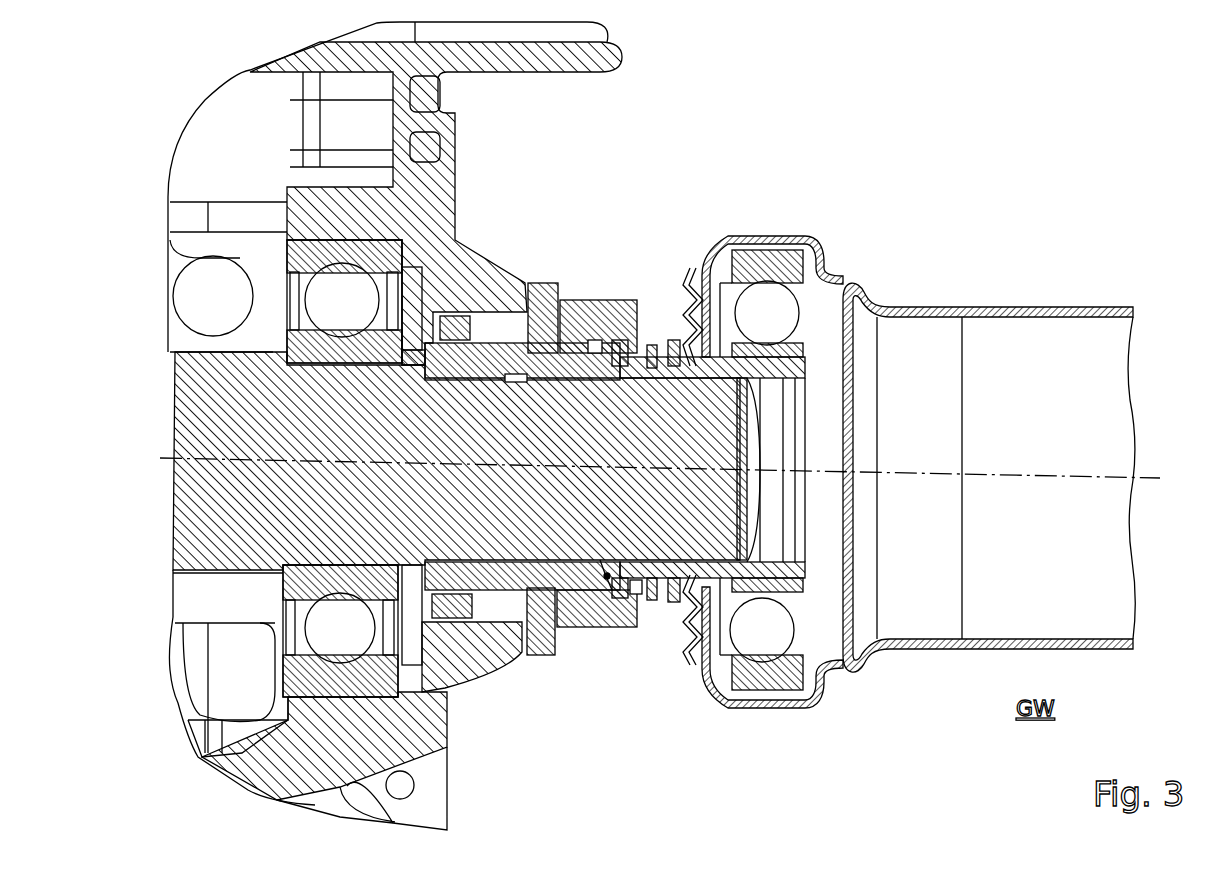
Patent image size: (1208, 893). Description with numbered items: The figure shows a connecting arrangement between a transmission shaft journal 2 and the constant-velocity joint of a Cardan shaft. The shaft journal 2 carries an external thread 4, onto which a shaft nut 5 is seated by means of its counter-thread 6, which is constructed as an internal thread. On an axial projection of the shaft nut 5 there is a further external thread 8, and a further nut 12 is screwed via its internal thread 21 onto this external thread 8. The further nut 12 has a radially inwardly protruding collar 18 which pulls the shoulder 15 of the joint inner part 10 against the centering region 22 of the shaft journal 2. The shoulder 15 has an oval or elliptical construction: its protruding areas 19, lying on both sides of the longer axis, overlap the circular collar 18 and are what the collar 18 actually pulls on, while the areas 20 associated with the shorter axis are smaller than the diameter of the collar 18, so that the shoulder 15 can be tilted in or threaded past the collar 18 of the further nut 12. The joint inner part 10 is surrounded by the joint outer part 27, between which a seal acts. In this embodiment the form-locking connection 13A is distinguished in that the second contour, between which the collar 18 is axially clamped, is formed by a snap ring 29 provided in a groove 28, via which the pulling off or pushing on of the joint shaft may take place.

The shaft journal 2 is at (705, 482).
The external thread 4 is at (522, 365).
The shaft nut 5 is at (545, 345).
The counter-thread 6 is at (513, 375).
The external thread 8 is at (566, 340).
The joint inner part 10 is at (800, 600).
The further nut 12 is at (575, 622).
The form-locking connection 13A is at (652, 340).
The shoulder 15 is at (620, 343).
The collar 18 is at (652, 345).
The areas 19 is at (618, 598).
The areas 20 is at (634, 595).
The internal thread 21 is at (594, 340).
The centering region 22 is at (608, 585).
The joint outer part 27 is at (790, 265).
The groove 28 is at (818, 628).
The snap ring 29 is at (690, 605).